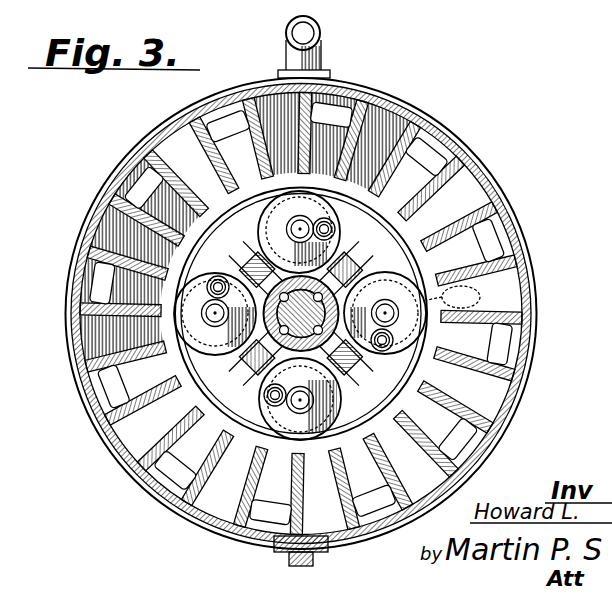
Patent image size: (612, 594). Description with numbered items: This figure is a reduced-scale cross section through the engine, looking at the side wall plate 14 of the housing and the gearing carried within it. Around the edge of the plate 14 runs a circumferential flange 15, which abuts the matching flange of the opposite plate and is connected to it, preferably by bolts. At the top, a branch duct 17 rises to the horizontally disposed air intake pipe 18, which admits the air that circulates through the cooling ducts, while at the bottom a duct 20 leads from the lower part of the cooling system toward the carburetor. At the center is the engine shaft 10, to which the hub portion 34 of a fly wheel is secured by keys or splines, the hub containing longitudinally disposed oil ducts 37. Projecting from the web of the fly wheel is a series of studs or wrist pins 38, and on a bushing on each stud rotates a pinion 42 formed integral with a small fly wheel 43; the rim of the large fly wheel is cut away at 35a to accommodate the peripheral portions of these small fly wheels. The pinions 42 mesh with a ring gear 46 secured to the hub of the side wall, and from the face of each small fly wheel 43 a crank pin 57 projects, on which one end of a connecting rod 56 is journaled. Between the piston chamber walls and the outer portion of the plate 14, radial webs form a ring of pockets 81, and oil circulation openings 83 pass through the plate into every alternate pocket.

The shaft 10 is at (338, 290).
The plates 14 is at (493, 297).
The circumferential flanges 15 is at (507, 231).
The branch ducts 17 is at (322, 57).
The air intake pipe 18 is at (320, 28).
The ducts 20 is at (315, 566).
The hub portions 34 is at (255, 352).
The cut away portions 35a is at (352, 193).
The oil ducts 37 is at (270, 276).
The studs or wrist pins 38 is at (212, 315).
The pinion 42 is at (453, 297).
The small fly wheel 43 is at (212, 348).
The ring gears 46 is at (343, 358).
The connecting rod 56 is at (348, 243).
The crank pin 57 is at (335, 230).
The pockets 81 is at (373, 131).
The oil circulation openings 83 is at (419, 150).